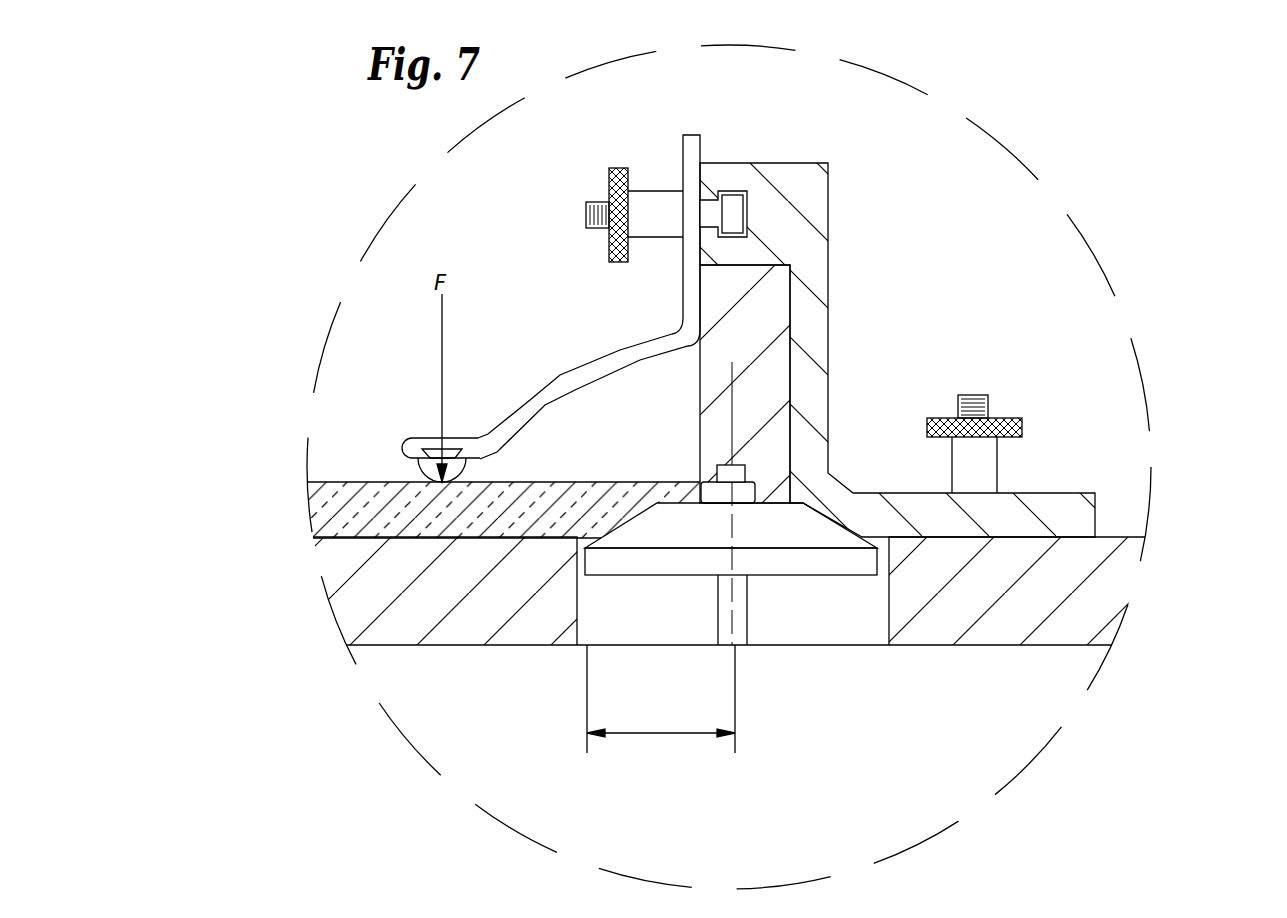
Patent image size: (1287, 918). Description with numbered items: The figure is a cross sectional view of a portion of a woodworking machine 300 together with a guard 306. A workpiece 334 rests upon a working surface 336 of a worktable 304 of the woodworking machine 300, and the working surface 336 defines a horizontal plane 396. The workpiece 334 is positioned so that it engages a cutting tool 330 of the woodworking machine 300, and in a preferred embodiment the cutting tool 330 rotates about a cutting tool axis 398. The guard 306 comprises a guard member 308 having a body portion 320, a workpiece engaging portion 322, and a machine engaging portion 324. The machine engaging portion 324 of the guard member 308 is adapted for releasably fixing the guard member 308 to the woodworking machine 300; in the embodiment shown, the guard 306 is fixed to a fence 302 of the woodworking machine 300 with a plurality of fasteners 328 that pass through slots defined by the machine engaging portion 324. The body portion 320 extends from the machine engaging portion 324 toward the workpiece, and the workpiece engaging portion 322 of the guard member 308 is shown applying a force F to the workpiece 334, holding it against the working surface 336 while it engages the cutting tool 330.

The woodworking machine 300 is at (443, 676).
The fence 302 is at (802, 240).
The worktable 304 is at (1120, 578).
The guard 306 is at (563, 276).
The guard member 308 is at (589, 375).
The body portion 320 is at (623, 376).
The workpiece engaging portion 322 is at (497, 463).
The machine engaging portion 324 is at (662, 160).
The fasteners 328 is at (618, 167).
The cutting tool 330 is at (845, 577).
The workpiece 334 is at (340, 482).
The working surface 336 is at (1118, 538).
The horizontal plane 396 is at (1108, 533).
The cutting tool axis 398 is at (735, 683).